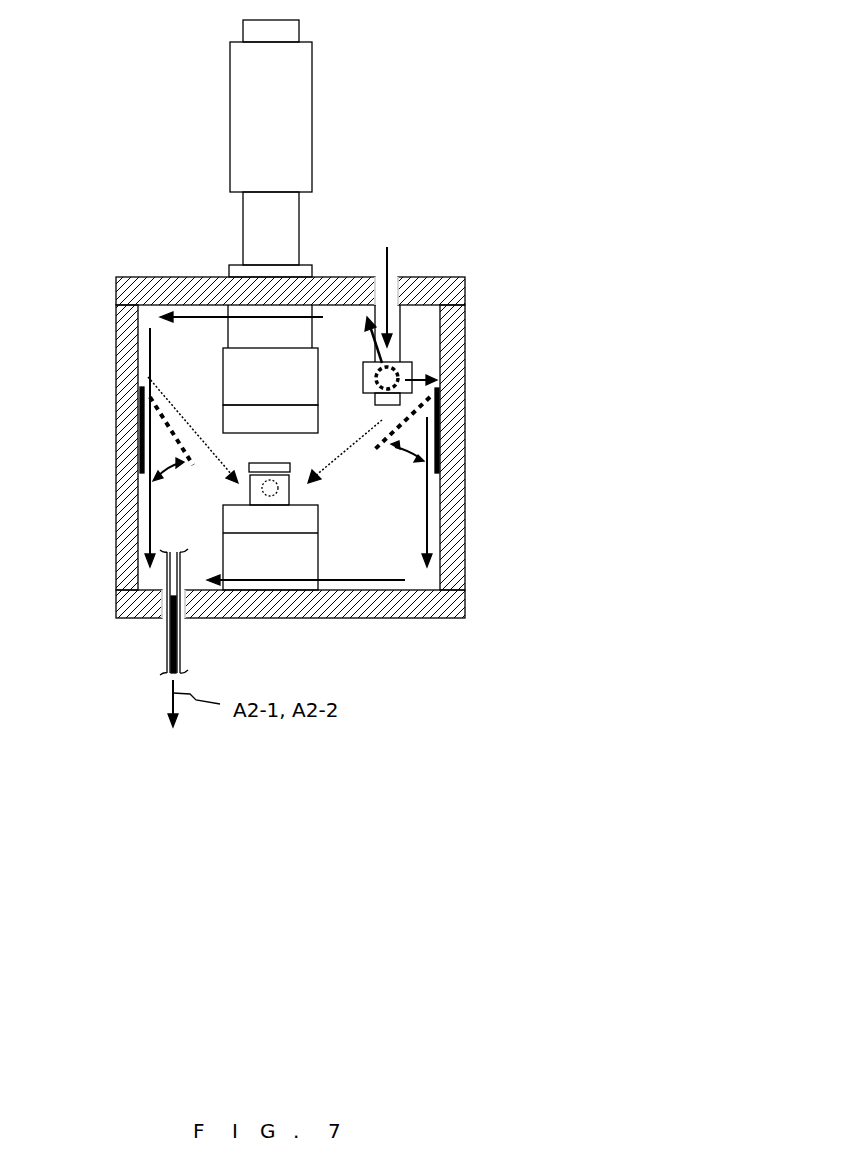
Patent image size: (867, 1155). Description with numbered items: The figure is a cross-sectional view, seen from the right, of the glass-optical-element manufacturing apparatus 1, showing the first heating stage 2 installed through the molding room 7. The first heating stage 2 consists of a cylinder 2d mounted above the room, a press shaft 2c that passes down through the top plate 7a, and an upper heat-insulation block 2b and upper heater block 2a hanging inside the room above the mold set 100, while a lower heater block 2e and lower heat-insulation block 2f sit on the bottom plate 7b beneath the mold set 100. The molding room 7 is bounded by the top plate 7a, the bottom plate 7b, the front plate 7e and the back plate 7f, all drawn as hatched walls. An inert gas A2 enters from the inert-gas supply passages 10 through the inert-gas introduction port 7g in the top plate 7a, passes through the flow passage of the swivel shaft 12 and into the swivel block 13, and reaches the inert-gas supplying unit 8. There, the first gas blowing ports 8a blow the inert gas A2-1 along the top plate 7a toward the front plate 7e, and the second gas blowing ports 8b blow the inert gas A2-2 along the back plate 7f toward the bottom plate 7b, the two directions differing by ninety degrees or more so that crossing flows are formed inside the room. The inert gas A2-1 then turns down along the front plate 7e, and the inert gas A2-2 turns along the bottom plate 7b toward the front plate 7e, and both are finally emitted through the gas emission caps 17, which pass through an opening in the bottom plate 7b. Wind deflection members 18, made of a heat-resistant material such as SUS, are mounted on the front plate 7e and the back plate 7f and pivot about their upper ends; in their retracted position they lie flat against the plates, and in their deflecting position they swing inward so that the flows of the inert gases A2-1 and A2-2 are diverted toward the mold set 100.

The glass-optical-element manufacturing apparatus 1 is at (108, 137).
The first heating stage 2 is at (229, 341).
The upper heater block 2a is at (230, 412).
The upper heat-insulation block 2b is at (230, 363).
The press shaft 2c is at (230, 267).
The cylinder 2d is at (305, 118).
The lower heater block 2e is at (315, 518).
The lower heat-insulation block 2f is at (273, 612).
The molding room 7 is at (286, 438).
The top plate 7a is at (432, 276).
The bottom plate 7b is at (461, 610).
The front plate 7e is at (115, 503).
The back plate 7f is at (462, 498).
The inert-gas introduction port 7g is at (392, 290).
The inert-gas supplying unit 8 is at (415, 324).
The first gas blowing ports 8a is at (358, 300).
The second gas blowing ports 8b is at (440, 393).
The inert-gas supply passages 10 is at (271, 496).
The swivel shaft 12 is at (395, 321).
The swivel block 13 is at (408, 372).
The gas emission caps 17 is at (162, 620).
The wind deflection members 18 is at (163, 427).
The mold set 100 is at (187, 565).
The inert gas A2 is at (377, 362).
The inert gas blown by first gas blowing ports A2-1 is at (205, 316).
The inert gas blown by second gas blowing ports A2-2 is at (445, 370).